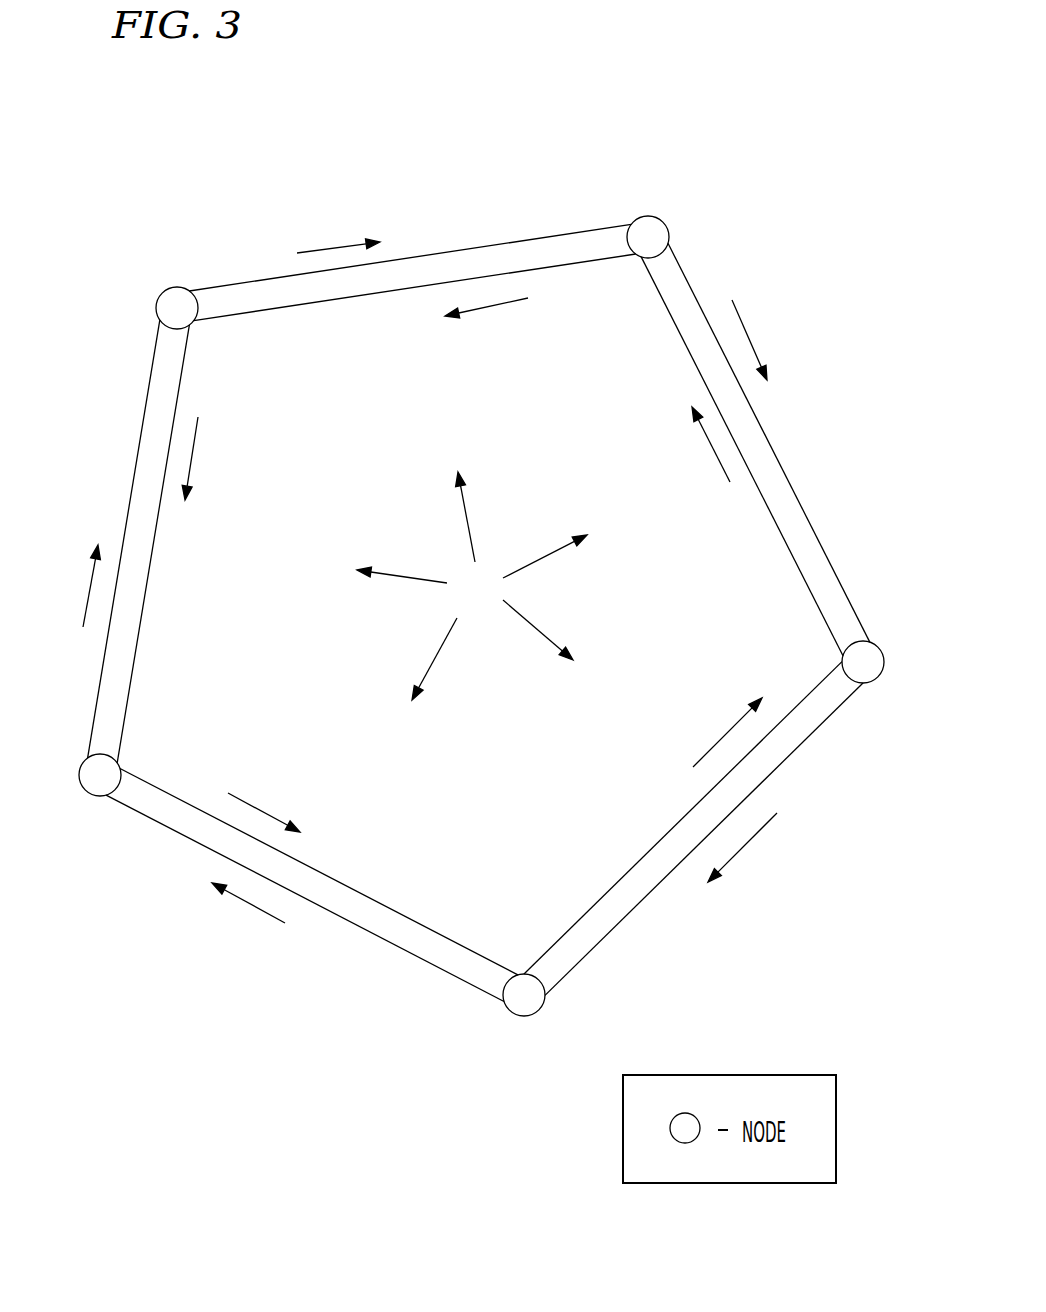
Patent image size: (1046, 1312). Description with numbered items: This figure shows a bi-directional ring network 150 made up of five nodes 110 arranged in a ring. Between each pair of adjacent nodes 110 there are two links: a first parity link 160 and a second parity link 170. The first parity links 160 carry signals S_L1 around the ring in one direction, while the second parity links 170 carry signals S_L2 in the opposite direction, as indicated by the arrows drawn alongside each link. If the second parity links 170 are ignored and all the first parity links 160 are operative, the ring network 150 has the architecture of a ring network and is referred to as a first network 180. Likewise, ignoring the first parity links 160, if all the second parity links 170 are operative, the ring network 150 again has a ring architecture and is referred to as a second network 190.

The node 110 is at (643, 250).
The bi-directional ring network 150 is at (475, 548).
The first parity link 160 is at (273, 305).
The second parity link 170 is at (530, 248).
The first network 180 is at (472, 586).
The second network 190 is at (428, 645).